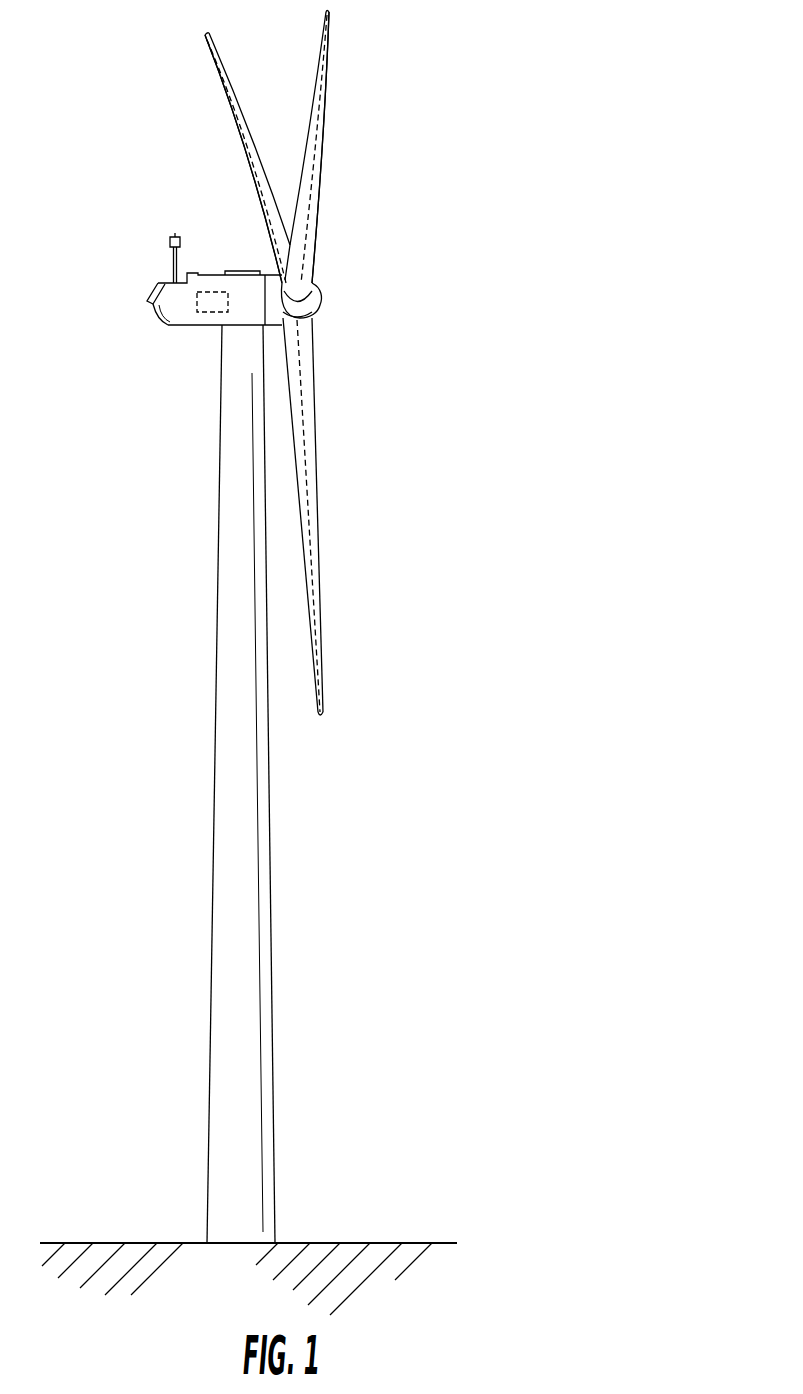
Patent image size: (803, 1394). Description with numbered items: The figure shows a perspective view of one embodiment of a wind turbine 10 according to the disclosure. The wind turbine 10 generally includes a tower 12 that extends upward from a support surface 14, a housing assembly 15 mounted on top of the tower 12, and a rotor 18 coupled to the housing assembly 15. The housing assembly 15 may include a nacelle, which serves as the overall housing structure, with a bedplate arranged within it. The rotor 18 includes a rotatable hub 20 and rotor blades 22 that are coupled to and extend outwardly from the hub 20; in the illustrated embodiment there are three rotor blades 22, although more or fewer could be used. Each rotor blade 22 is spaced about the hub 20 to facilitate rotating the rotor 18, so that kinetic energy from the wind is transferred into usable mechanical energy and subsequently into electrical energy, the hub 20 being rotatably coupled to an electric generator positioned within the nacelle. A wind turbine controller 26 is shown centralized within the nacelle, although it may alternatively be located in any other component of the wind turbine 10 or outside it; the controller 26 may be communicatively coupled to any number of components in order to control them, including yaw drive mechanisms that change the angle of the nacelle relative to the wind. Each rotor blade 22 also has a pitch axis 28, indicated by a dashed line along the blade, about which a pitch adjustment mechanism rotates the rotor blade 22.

The wind turbine 10 is at (455, 139).
The tower 12 is at (246, 907).
The support surface 14 is at (125, 1243).
The housing assembly 15 is at (185, 327).
The rotor 18 is at (329, 276).
The rotatable hub 20 is at (323, 306).
The rotor blade 22 is at (242, 110).
The wind turbine controller 26 is at (200, 296).
The pitch axis 28 is at (242, 157).